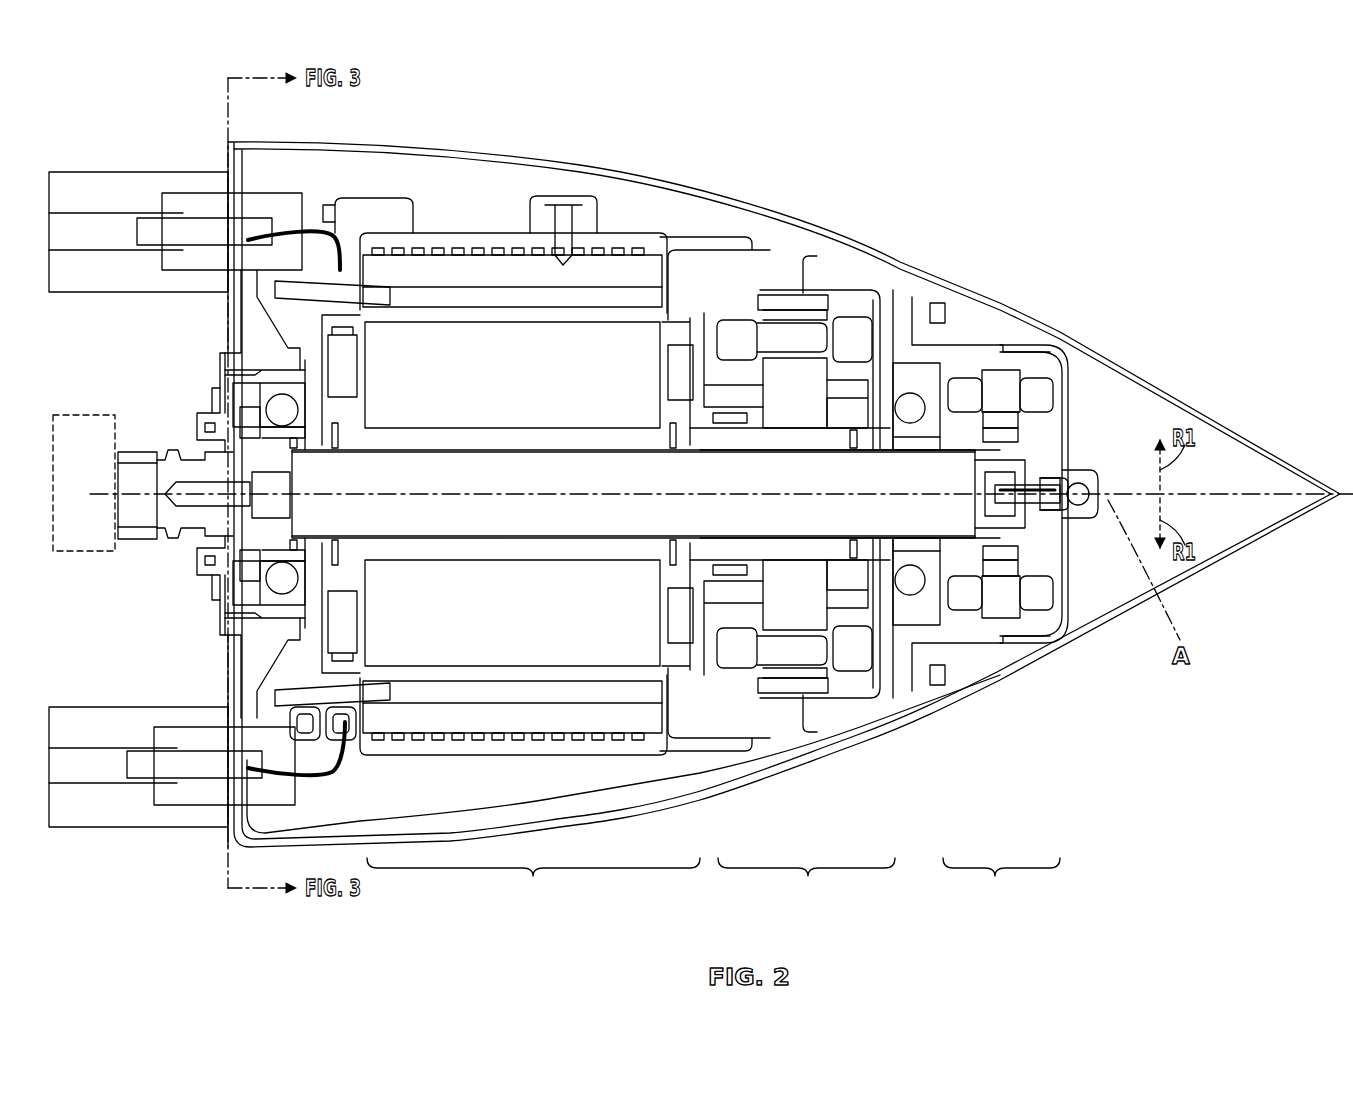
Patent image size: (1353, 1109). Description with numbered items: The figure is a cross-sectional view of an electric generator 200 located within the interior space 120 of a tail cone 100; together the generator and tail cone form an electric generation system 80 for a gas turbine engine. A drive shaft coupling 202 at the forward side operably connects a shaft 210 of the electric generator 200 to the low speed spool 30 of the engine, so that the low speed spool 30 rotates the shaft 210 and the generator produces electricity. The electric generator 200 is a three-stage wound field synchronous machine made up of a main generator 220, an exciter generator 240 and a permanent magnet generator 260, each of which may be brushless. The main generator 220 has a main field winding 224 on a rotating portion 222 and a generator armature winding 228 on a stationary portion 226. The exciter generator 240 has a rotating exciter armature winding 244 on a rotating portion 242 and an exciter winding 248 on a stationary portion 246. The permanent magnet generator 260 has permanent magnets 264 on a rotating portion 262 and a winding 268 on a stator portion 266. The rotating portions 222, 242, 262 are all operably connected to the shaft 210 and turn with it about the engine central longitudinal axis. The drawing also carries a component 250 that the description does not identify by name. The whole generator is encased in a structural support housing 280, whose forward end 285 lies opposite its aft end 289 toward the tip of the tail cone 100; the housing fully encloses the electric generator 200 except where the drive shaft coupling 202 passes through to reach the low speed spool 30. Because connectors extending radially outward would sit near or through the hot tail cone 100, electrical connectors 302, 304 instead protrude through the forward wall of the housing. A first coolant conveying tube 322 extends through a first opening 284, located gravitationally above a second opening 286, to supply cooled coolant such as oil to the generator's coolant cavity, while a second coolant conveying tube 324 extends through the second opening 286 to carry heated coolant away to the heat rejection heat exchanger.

The electric generation system 80 is at (92, 140).
The low speed spool 30 is at (85, 412).
The tail cone 100 is at (1005, 372).
The interior space 120 is at (1218, 467).
The electric generator 200 is at (300, 190).
The drive shaft coupling 202 is at (174, 458).
The shaft 210 is at (912, 512).
The main generator 220 is at (533, 882).
The rotating portion 222 is at (668, 355).
The main field winding 224 is at (460, 355).
The stationary portion 226 is at (345, 290).
The generator armature winding 228 is at (415, 260).
The exciter generator 240 is at (806, 882).
The rotating portion 242 is at (812, 395).
The rotating exciter armature winding 244 is at (797, 370).
The stationary portion 246 is at (776, 315).
The exciter winding 248 is at (735, 330).
The bearing 250 is at (930, 312).
The permanent magnet generator 260 is at (1001, 882).
The rotating portion 262 is at (1005, 437).
The permanent magnets 264 is at (1005, 425).
The stator portion 266 is at (1003, 372).
The winding 268 is at (1030, 398).
The structural support housing 280 is at (775, 752).
The first opening 284 is at (228, 172).
The forward end 285 is at (128, 374).
The second opening 286 is at (228, 707).
The aft end 289 is at (1203, 330).
The electrical connector 302 is at (188, 246).
The electrical connector 304 is at (188, 780).
The first coolant conveying tube 322 is at (216, 268).
The second coolant conveying tube 324 is at (216, 806).